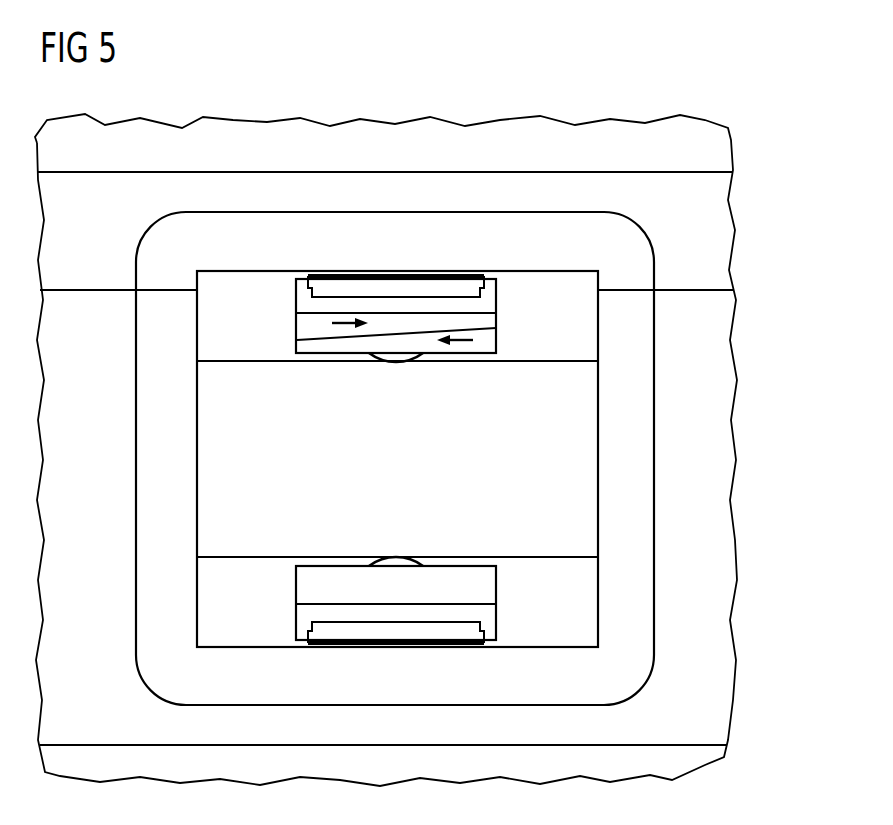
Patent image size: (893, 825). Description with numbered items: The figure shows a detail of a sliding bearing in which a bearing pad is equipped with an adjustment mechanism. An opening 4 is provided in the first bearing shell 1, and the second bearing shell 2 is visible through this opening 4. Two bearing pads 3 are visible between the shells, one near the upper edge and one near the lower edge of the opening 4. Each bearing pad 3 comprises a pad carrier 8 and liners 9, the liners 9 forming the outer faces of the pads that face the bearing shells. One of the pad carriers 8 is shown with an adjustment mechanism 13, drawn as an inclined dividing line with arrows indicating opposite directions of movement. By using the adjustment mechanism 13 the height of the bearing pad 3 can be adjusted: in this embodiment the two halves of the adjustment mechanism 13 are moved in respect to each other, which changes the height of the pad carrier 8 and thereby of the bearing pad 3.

The first bearing shell 1 is at (722, 440).
The second bearing shell 2 is at (588, 472).
The bearing pad 3 is at (297, 313).
The opening 4 is at (598, 422).
The pad carrier 8 is at (487, 585).
The liner 9 is at (397, 285).
The adjustment mechanism 13 is at (496, 328).